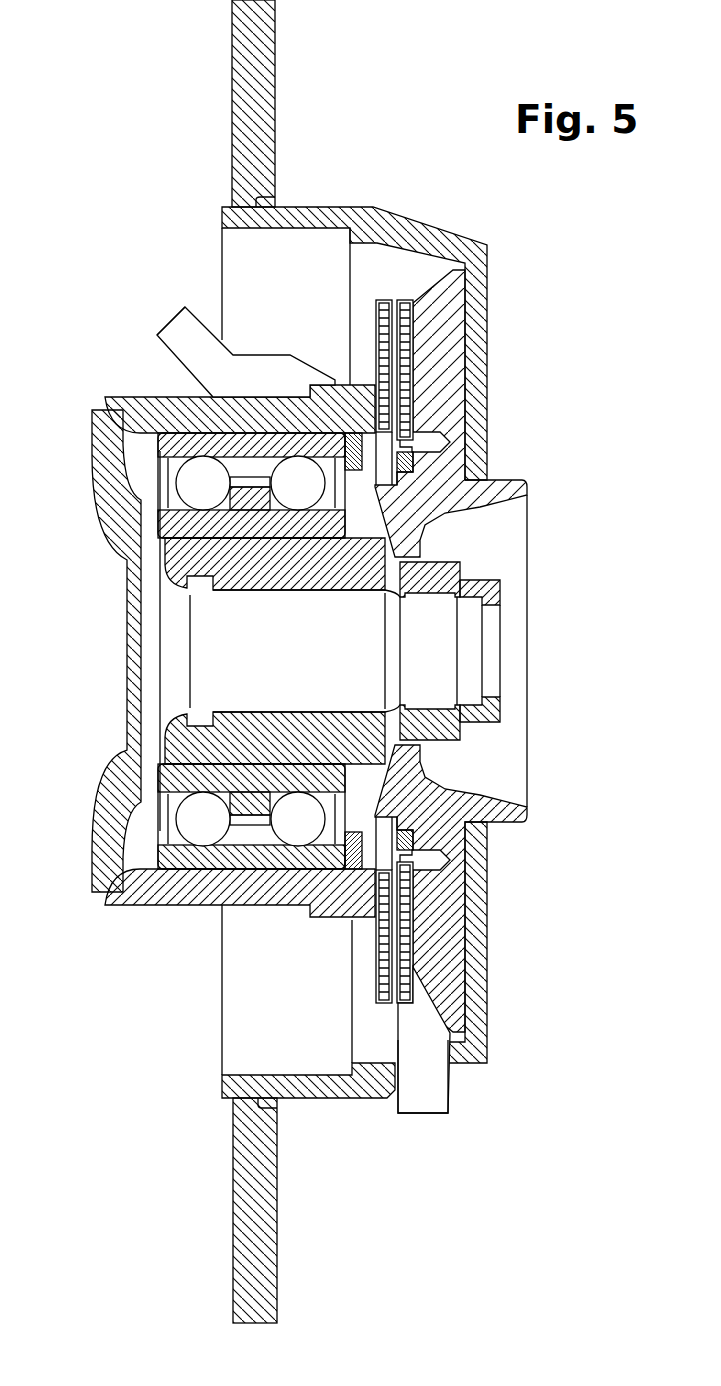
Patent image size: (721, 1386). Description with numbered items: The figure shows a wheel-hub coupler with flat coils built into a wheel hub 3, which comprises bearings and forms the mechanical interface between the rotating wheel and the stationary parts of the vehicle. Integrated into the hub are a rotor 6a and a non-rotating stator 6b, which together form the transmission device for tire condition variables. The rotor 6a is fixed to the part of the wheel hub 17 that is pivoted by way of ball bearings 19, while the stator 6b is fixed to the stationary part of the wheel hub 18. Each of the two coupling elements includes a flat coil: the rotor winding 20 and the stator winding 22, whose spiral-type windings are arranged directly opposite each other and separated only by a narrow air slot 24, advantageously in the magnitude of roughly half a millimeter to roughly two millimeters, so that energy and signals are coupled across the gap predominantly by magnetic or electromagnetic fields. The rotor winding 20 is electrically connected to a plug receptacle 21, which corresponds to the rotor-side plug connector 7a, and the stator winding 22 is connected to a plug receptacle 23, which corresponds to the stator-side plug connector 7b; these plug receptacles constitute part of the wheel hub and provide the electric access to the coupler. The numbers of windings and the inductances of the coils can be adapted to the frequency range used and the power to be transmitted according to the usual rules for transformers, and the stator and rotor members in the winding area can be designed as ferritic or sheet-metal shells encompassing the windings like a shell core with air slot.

The wheel hub 3 is at (517, 408).
The rotor 6a is at (402, 300).
The stator 6b is at (390, 300).
The plug connector 7a is at (448, 1092).
The plug connector 7b is at (157, 328).
The pivoted part of wheel hub 17 is at (450, 899).
The stationary part of wheel hub 18 is at (160, 880).
The ball bearings 19 is at (205, 855).
The rotor winding 20 is at (413, 312).
The plug receptacle 21 is at (428, 1092).
The stator winding 22 is at (380, 300).
The plug receptacle 23 is at (190, 333).
The air slot 24 is at (393, 1005).